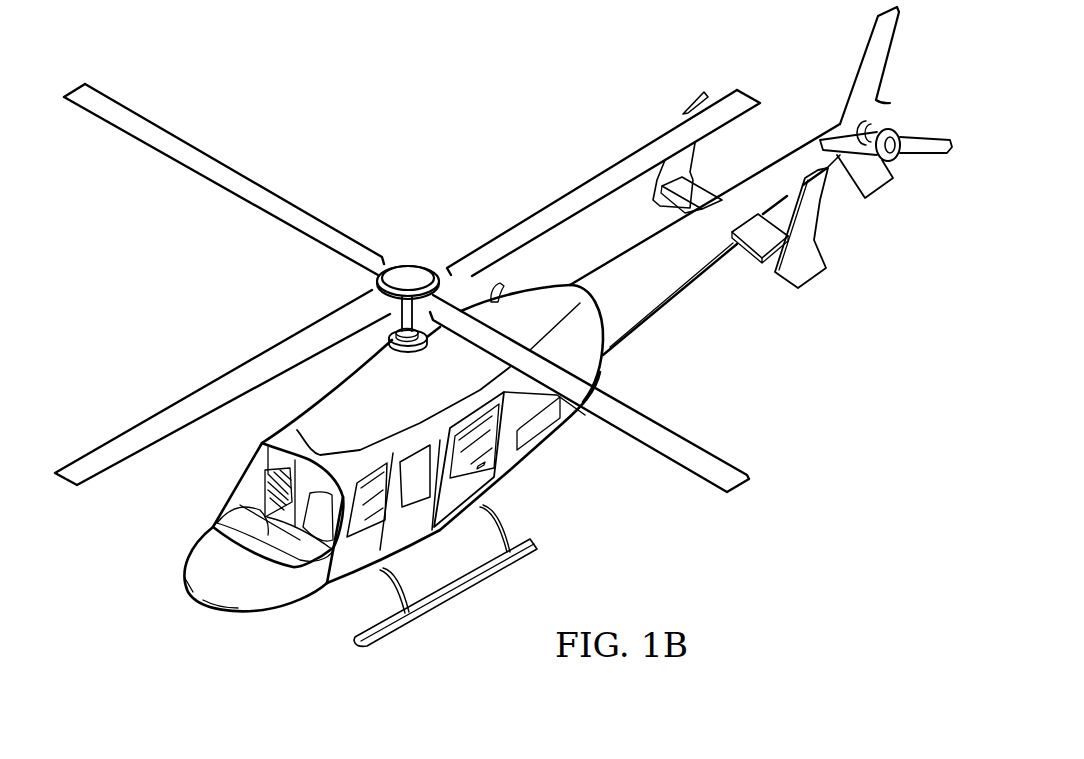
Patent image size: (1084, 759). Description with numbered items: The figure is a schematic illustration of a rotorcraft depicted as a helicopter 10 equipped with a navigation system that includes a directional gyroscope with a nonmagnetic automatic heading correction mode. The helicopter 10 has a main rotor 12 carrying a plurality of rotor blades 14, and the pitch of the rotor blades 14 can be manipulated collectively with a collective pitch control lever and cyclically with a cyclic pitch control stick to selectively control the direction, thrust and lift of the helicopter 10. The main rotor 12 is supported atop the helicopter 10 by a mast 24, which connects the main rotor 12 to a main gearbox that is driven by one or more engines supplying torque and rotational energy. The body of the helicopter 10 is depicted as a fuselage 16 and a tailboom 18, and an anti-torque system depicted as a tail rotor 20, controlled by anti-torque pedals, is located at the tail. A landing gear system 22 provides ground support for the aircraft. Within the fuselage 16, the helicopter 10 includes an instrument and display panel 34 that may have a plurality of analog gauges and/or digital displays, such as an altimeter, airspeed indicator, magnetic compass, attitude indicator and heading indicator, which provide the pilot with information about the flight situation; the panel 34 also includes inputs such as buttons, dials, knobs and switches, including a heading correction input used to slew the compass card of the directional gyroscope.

The helicopter 10 is at (329, 99).
The main rotor 12 is at (430, 234).
The rotor blades 14 is at (587, 186).
The fuselage 16 is at (512, 464).
The tailboom 18 is at (663, 286).
The tail rotor 20 is at (918, 136).
The landing gear system 22 is at (458, 591).
The mast 24 is at (377, 316).
The instrument and display panel 34 is at (256, 507).